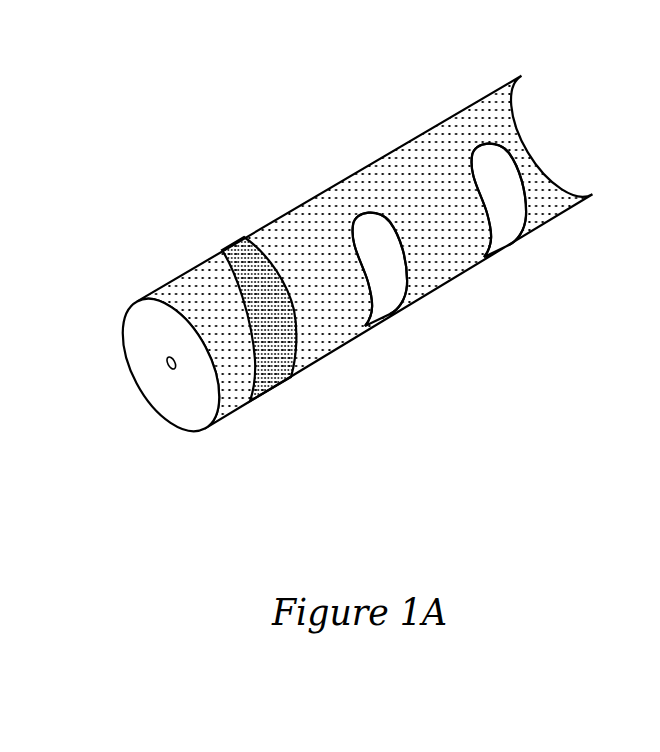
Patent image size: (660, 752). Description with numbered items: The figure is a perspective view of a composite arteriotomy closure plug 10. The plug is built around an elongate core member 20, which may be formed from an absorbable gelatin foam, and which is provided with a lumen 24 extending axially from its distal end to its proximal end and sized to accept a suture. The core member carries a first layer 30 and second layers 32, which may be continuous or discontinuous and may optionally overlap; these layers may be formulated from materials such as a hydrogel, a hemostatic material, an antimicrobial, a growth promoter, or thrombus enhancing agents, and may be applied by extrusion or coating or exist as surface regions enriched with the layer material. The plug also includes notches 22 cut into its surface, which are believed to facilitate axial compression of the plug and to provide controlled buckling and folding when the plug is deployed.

The composite arteriotomy closure plug 10 is at (286, 104).
The elongate core member 20 is at (184, 407).
The notches 22 is at (383, 292).
The lumen 24 is at (169, 366).
The first layer 30 is at (217, 263).
The second layers 32 is at (512, 105).